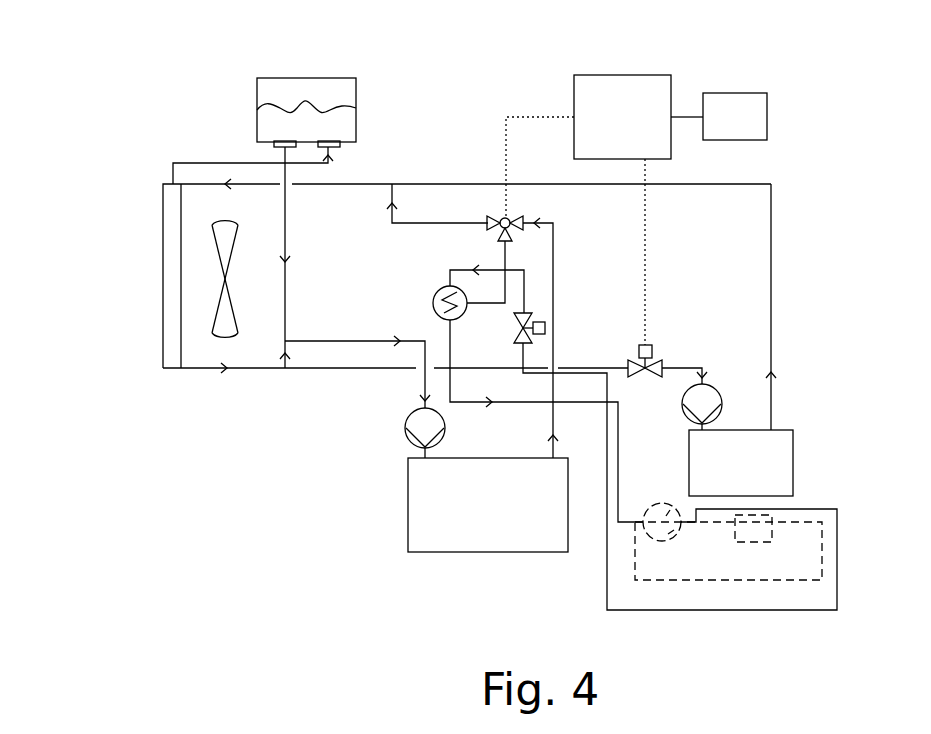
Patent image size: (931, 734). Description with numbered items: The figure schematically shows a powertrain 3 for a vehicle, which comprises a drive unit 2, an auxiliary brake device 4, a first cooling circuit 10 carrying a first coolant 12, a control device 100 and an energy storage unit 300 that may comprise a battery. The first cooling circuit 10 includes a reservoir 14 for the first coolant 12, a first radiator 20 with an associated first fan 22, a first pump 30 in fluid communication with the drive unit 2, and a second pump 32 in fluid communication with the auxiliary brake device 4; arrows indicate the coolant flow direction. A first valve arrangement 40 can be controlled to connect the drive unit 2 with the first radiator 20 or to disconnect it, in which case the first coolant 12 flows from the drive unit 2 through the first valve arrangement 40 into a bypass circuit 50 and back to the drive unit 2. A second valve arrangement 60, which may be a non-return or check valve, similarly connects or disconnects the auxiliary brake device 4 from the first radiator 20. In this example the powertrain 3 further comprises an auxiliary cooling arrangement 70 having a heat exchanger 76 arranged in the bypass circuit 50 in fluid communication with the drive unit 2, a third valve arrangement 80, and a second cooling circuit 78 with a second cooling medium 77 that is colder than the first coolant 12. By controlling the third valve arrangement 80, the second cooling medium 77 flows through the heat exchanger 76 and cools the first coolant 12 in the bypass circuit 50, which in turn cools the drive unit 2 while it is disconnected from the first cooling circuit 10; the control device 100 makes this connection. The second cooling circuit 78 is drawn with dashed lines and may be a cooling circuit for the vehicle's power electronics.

The powertrain 3 is at (108, 155).
The first coolant 12 is at (264, 123).
The reservoir 14 is at (357, 90).
The first radiator 20 is at (162, 272).
The first fan 22 is at (232, 257).
The first cooling circuit 10 is at (268, 380).
The auxiliary cooling arrangement 70 is at (400, 307).
The heat exchanger 76 is at (433, 293).
The first valve arrangement 40 is at (502, 213).
The bypass circuit 50 is at (499, 255).
The third valve arrangement 80 is at (521, 328).
The second valve arrangement 60 is at (638, 351).
The first pump 30 is at (406, 428).
The second pump 32 is at (683, 408).
The second cooling medium 77 is at (513, 403).
The drive unit 2 is at (488, 505).
The auxiliary brake device 4 is at (741, 463).
The second cooling circuit 78 is at (728, 547).
The control device 100 is at (622, 117).
The energy storage unit 300 is at (735, 116).